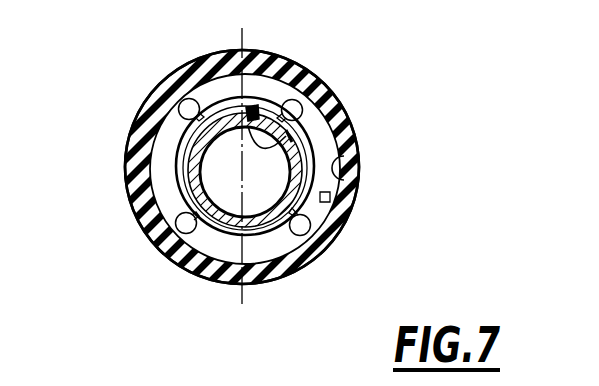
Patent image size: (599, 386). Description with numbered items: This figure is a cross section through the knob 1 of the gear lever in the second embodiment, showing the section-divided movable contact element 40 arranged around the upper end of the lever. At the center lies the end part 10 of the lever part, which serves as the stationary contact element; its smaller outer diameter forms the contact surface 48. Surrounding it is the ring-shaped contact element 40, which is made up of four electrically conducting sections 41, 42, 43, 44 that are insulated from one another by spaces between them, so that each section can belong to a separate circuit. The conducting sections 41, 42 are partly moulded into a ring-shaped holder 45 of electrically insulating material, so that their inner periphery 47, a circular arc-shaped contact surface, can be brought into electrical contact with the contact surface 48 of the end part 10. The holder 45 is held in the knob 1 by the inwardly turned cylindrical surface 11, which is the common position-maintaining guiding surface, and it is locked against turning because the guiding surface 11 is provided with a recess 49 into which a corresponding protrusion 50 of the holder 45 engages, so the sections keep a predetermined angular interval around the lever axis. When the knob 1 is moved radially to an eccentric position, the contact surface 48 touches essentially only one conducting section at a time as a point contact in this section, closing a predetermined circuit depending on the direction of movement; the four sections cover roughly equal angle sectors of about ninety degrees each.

The knob 1 is at (143, 75).
The end part 10 is at (213, 130).
The inwardly turned cylindrical surface 11 is at (190, 273).
The contact element 40 is at (286, 128).
The conducting section 41 is at (256, 110).
The conducting section 42 is at (308, 214).
The conducting section 43 is at (180, 257).
The conducting section 44 is at (178, 213).
The ring-shaped holder 45 is at (323, 143).
The inner periphery 47 is at (303, 271).
The contact surface 48 is at (196, 137).
The recess 49 is at (324, 198).
The protrusion 50 is at (348, 160).